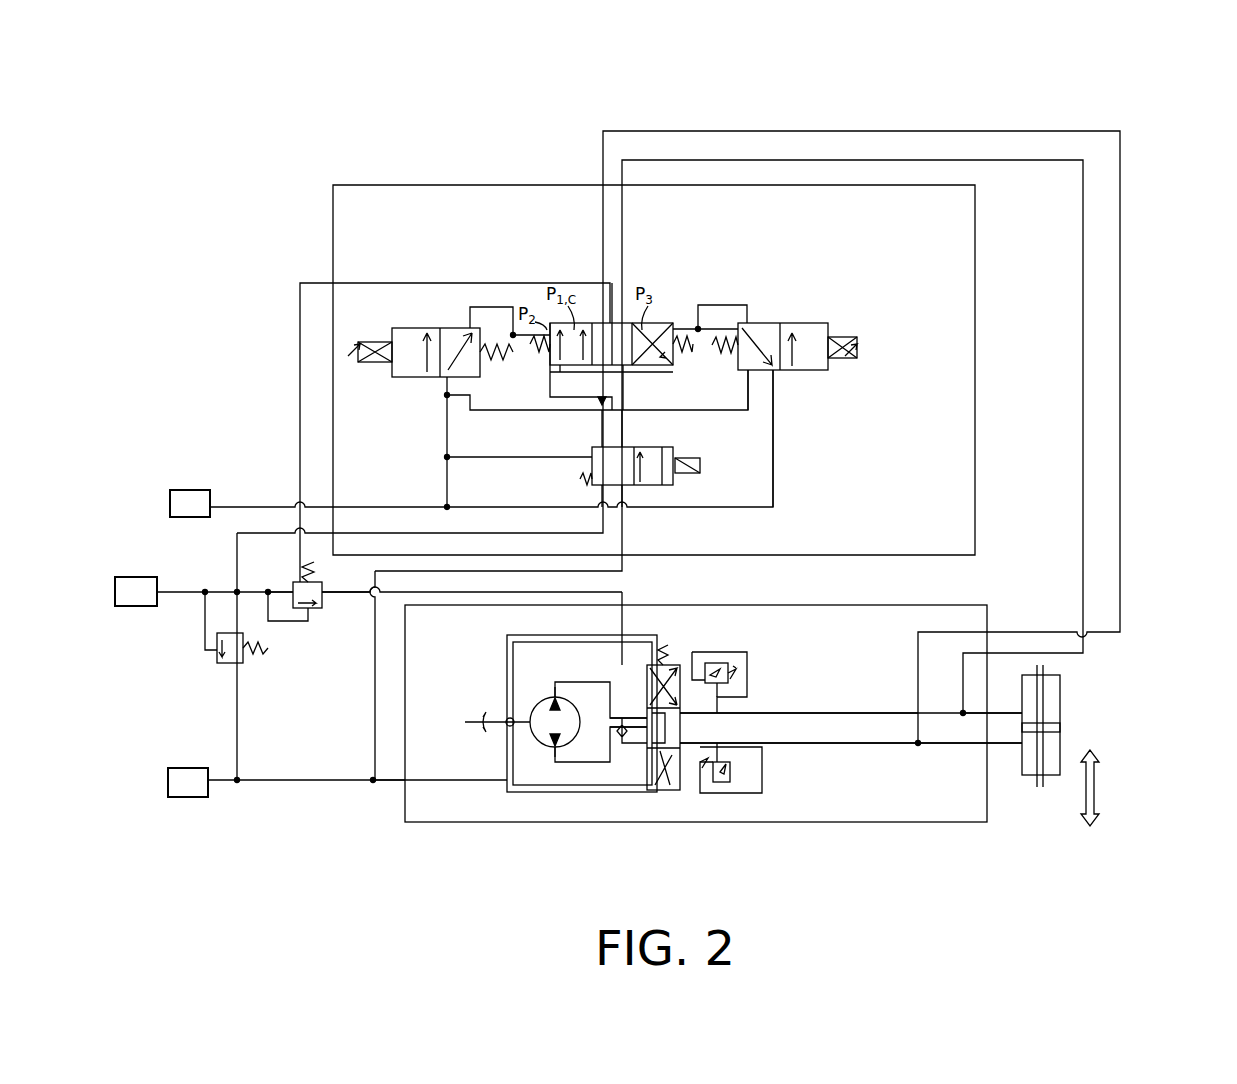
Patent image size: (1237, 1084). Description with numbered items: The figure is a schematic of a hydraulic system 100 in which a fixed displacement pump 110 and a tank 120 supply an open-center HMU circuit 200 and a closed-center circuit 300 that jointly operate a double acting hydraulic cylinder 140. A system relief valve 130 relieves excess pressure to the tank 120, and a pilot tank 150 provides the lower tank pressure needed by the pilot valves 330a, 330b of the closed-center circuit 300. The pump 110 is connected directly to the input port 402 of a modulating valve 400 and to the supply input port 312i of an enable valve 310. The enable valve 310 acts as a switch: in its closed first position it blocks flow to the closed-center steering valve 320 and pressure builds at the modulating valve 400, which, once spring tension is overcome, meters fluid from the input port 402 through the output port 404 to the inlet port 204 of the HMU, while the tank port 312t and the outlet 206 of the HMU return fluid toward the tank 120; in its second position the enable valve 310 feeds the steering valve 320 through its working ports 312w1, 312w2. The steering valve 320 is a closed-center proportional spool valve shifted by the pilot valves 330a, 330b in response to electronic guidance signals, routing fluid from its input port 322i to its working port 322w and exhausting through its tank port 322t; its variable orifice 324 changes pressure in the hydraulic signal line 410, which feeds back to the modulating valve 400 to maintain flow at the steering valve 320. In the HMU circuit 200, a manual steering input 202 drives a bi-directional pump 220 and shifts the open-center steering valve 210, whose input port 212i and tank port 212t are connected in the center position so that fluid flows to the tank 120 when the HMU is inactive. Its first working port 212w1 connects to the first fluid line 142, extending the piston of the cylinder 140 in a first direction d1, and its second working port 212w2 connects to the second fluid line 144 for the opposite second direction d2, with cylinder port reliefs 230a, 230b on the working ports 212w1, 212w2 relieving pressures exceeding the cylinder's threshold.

The hydraulic system 100 is at (1140, 88).
The fixed displacement pump 110 is at (134, 578).
The tank 120 is at (188, 769).
The system relief valve 130 is at (217, 659).
The hydraulic cylinder 140 is at (1060, 695).
The first fluid line 142 is at (1001, 706).
The second fluid line 144 is at (1001, 751).
The pilot tank 150 is at (189, 490).
The HMU circuit 200 is at (433, 827).
The manual steering input 202 is at (476, 730).
The inlet port of the HMU 204 is at (632, 588).
The outlet of the HMU 206 is at (390, 792).
The steering valve 210 is at (668, 664).
The input port of the steering valve 212i is at (630, 714).
The tank port of the steering valve 212t is at (632, 742).
The first working port 212w1 is at (695, 715).
The second working port 212w2 is at (682, 750).
The bi-directional pump 220 is at (532, 706).
The first cylinder port relief 230a is at (718, 682).
The second cylinder port relief 230b is at (728, 779).
The closed-center circuit 300 is at (368, 185).
The enable valve 310 is at (678, 484).
The supply input port of the enable valve 312i is at (592, 493).
The tank port of the enable valve 312t is at (628, 493).
The first working port of the enable valve 312w1 is at (597, 432).
The second working port of the enable valve 312w2 is at (622, 432).
The steering valve 320 is at (661, 329).
The input port of the steering valve 322i is at (593, 375).
The tank port of the steering valve 322t is at (630, 373).
The working port of the steering valve 322w is at (614, 321).
The variable orifice 324 is at (558, 357).
The first pilot valve 330a is at (798, 329).
The second pilot valve 330b is at (412, 374).
The modulating valve 400 is at (313, 608).
The input port of the modulating valve 402 is at (276, 592).
The output port of the modulating valve 404 is at (349, 596).
The hydraulic signal line 410 is at (410, 280).
The first direction d1 is at (1092, 772).
The second direction d2 is at (1092, 853).